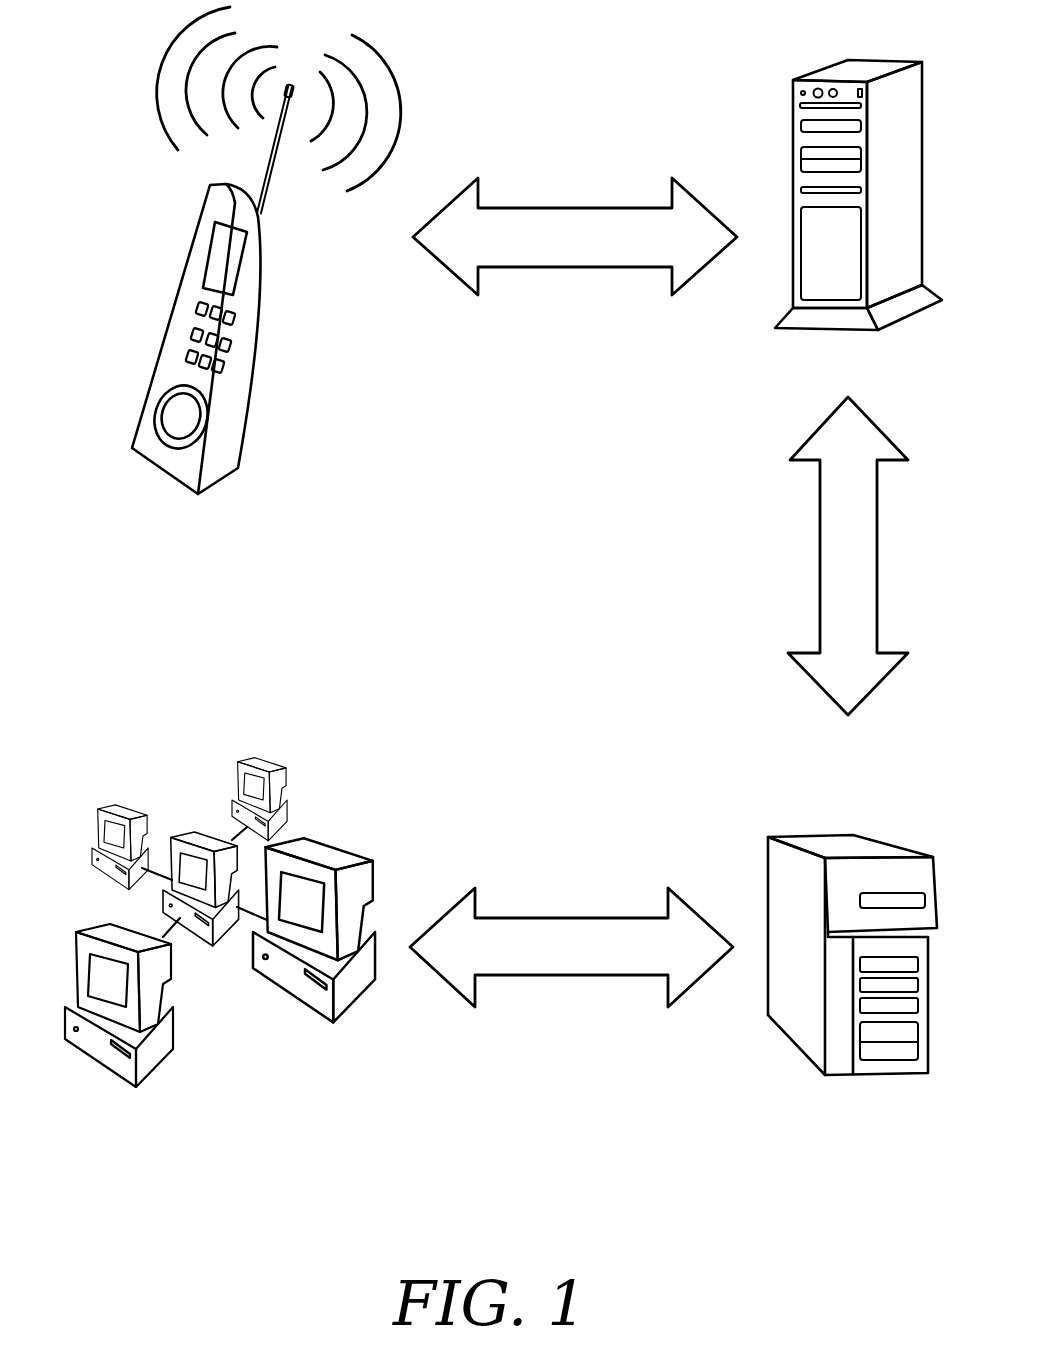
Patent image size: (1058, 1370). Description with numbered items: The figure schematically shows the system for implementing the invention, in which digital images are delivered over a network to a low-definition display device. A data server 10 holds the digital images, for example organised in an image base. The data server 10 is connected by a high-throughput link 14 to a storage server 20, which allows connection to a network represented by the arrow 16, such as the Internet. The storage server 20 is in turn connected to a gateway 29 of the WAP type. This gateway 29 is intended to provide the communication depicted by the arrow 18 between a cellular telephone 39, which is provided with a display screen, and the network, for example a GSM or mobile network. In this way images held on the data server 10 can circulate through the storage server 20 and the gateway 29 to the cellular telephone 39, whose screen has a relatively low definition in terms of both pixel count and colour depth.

The data server 10 is at (215, 970).
The high-throughput link 14 is at (543, 960).
The arrow representing the network 16 is at (840, 553).
The arrow representing the communication 18 is at (580, 208).
The storage server 20 is at (805, 837).
The gateway 29 is at (810, 323).
The cellular telephone 39 is at (257, 363).